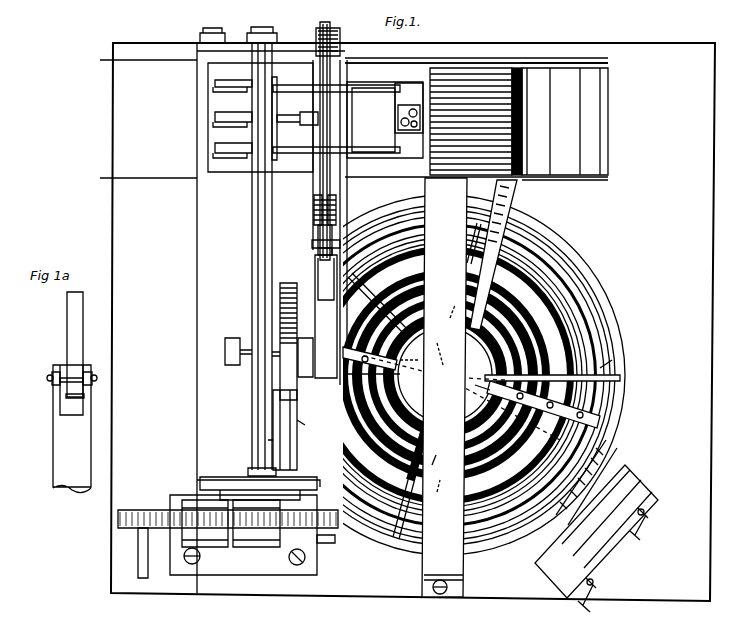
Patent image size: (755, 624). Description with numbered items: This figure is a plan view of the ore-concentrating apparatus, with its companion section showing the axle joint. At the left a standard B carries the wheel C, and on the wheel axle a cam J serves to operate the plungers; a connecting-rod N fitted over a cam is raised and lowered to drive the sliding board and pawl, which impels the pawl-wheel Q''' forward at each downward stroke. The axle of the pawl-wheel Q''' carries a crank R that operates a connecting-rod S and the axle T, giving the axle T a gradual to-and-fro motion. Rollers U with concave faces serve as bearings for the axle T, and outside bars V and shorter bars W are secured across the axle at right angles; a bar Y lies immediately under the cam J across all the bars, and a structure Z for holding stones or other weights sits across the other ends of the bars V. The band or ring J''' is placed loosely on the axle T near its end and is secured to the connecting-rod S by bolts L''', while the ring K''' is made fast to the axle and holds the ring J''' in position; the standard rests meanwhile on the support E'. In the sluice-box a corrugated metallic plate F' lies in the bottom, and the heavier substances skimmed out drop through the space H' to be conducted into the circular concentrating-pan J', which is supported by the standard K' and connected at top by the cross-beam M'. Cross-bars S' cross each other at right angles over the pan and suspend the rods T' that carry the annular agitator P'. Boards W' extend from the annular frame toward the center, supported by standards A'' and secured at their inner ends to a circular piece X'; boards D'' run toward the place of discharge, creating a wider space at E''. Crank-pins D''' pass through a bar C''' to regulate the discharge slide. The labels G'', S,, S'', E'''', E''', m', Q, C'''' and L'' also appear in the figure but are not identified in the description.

In FIG. 1, the standard B is at (271, 39).
In FIG. 1, the bar Y is at (270, 259).
In FIG. 1, the cam J is at (232, 119).
In FIG. 1, the outside bars V is at (336, 91).
In FIG. 1, the axle T is at (334, 131).
In FIG. 1A, the axle T is at (82, 344).
In FIG. 1, the rollers U is at (316, 209).
In FIG. 1, the rods T' is at (315, 235).
In FIG. 1, the connecting-rod S is at (326, 316).
In FIG. 1A, the connecting-rod S is at (72, 429).
In FIG. 1, the band or ring J''' is at (312, 242).
In FIG. 1A, the band or ring J''' is at (60, 359).
In FIG. 1, the band or ring K''' is at (312, 256).
In FIG. 1A, the band or ring K''' is at (57, 403).
In FIG. 1, the bars W is at (373, 120).
In FIG. 1, the weight-holding structure Z is at (409, 108).
In FIG. 1, the space H' is at (475, 108).
In FIG. 1, the corrugated metallic plate F' is at (476, 52).
In FIG. 1, the frame G'' is at (560, 121).
In FIG. 1, the boards D'' is at (447, 372).
In FIG. 1, the bolts L''' is at (447, 386).
In FIG. 1A, the bolts L''' is at (99, 377).
In FIG. 1, the annular agitator P' is at (459, 375).
In FIG. 1, the wheel C is at (445, 375).
In FIG. 1, the standard K' is at (445, 375).
In FIG. 1, the circular piece X' is at (445, 375).
In FIG. 1, the cross-bars S' is at (492, 255).
In FIG. 1, the spoke S, is at (371, 360).
In FIG. 1, the spoke S'' is at (543, 404).
In FIG. 1, the boards W' is at (568, 377).
In FIG. 1, the cross-beam M' is at (447, 365).
In FIG. 1, the connecting-rod N is at (444, 387).
In FIG. 1, the wider discharge space E'' is at (455, 311).
In FIG. 1, the point E'''' is at (409, 361).
In FIG. 1, the support E' is at (482, 385).
In FIG. 1, the point E''' is at (434, 467).
In FIG. 1, the mark m' is at (438, 417).
In FIG. 1, the concentrating-pan J' is at (607, 359).
In FIG. 1, the pawl-wheel Q''' is at (300, 341).
In FIG. 1, the crank R is at (269, 349).
In FIG. 1, the bar C''' is at (293, 430).
In FIG. 1, the plate Q is at (258, 480).
In FIG. 1, the plate C'''' is at (596, 531).
In FIG. 1, the crank-pins D''' is at (627, 560).
In FIG. 1, the standards A'' is at (586, 482).
In FIG. 1A, the clip L'' is at (44, 377).